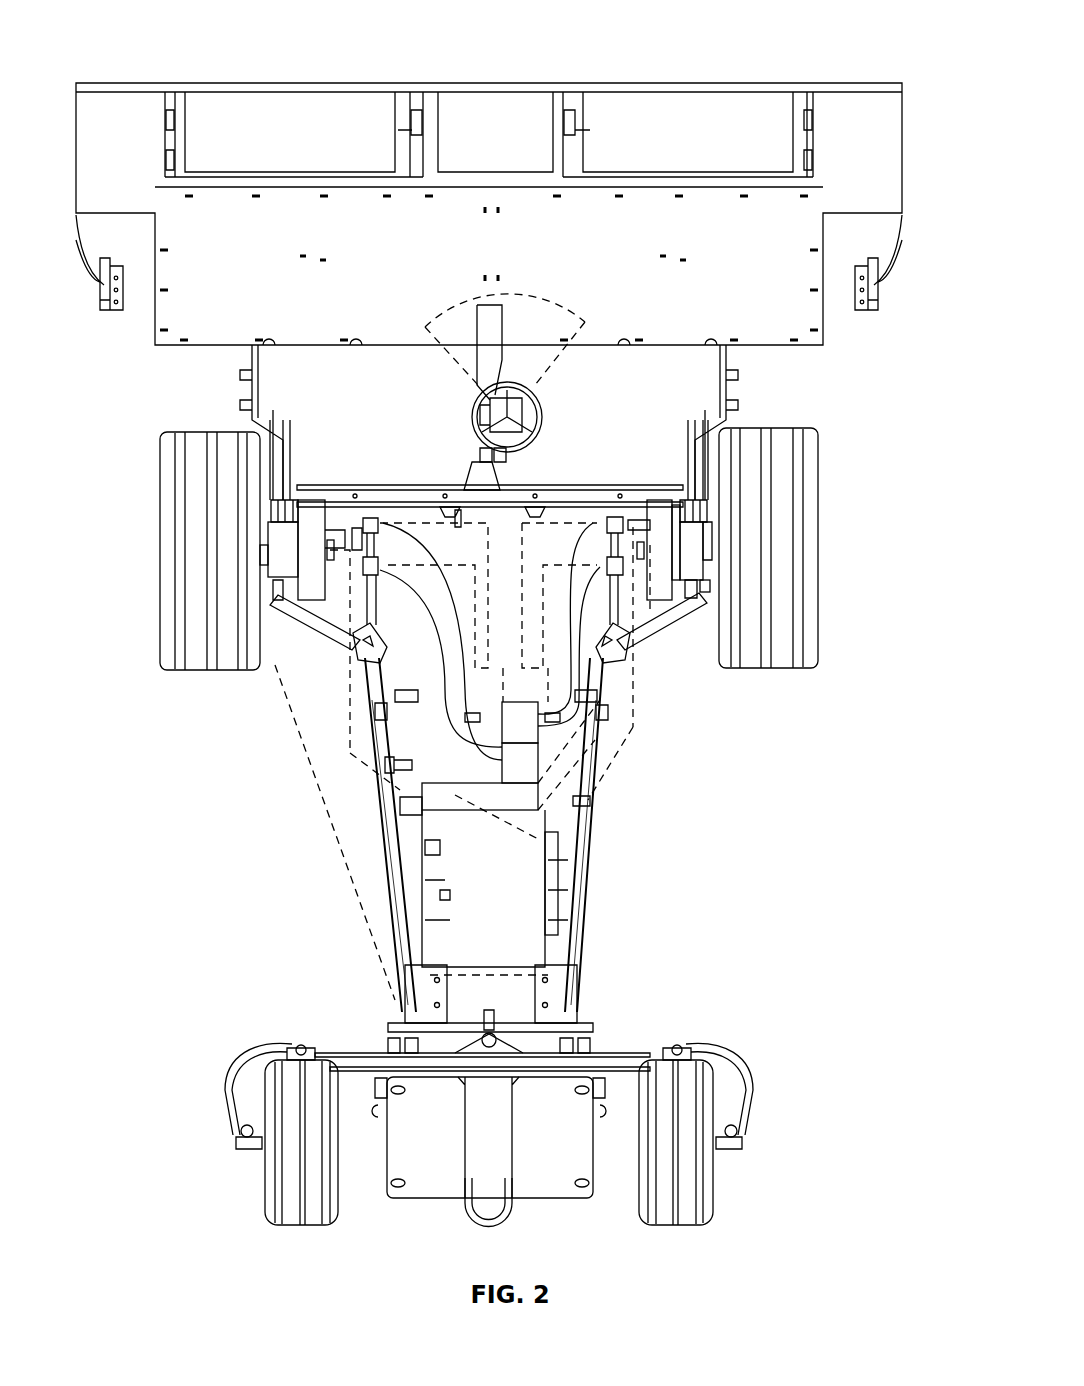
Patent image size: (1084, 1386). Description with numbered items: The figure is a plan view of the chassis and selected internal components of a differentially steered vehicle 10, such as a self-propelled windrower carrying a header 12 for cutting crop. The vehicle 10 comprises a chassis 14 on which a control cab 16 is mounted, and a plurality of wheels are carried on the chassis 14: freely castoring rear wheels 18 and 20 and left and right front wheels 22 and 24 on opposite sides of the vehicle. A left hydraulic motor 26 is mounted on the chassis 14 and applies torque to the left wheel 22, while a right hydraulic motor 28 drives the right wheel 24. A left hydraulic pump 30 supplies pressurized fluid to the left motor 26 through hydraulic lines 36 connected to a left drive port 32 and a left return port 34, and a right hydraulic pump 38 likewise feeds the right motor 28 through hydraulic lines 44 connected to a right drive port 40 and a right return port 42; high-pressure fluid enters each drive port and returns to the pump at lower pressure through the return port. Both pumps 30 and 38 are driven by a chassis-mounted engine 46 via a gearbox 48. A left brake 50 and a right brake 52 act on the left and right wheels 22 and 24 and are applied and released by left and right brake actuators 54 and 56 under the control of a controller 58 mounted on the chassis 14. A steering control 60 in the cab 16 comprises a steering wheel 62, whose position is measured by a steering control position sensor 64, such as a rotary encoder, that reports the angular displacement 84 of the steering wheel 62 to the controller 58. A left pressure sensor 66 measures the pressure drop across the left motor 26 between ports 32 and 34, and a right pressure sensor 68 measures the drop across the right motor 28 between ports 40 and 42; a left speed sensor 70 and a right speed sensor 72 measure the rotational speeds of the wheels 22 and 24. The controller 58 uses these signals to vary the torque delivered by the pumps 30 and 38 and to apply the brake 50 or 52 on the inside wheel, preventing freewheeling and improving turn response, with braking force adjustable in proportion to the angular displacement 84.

The differentially steered vehicle 10 is at (114, 28).
The header 12 is at (890, 118).
The chassis 14 is at (578, 895).
The control cab 16 is at (715, 360).
The rear wheel 18 is at (270, 1190).
The rear wheel 20 is at (705, 1200).
The left front wheel 22 is at (178, 650).
The right front wheel 24 is at (812, 650).
The left hydraulic motor 26 is at (310, 530).
The right hydraulic motor 28 is at (655, 530).
The left hydraulic pump 30 is at (527, 755).
The left drive port 32 is at (335, 520).
The left return port 34 is at (360, 610).
The hydraulic lines 36 is at (440, 770).
The right hydraulic pump 38 is at (518, 725).
The right drive port 40 is at (625, 520).
The right return port 42 is at (620, 640).
The hydraulic lines 44 is at (600, 680).
The engine 46 is at (450, 870).
The gearbox 48 is at (450, 790).
The left brake 50 is at (285, 560).
The right brake 52 is at (695, 560).
The left brake actuator 54 is at (295, 590).
The right brake actuator 56 is at (705, 590).
The controller 58 is at (565, 910).
The steering control 60 is at (555, 383).
The steering wheel 62 is at (530, 392).
The steering control position sensor 64 is at (525, 440).
The left pressure sensor 66 is at (395, 540).
The right pressure sensor 68 is at (598, 660).
The left speed sensor 70 is at (372, 540).
The right speed sensor 72 is at (642, 540).
The angular displacement 84 is at (548, 312).